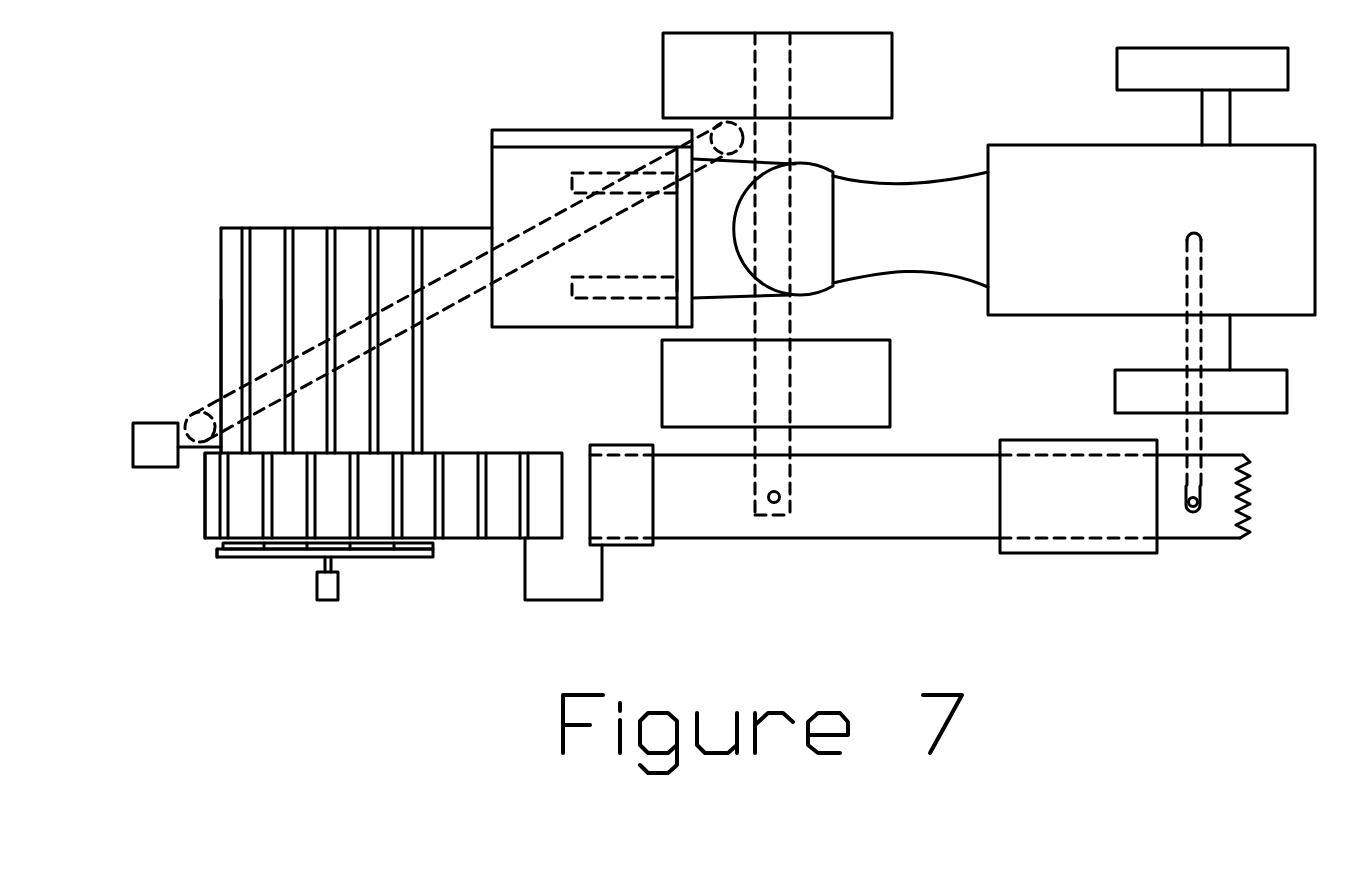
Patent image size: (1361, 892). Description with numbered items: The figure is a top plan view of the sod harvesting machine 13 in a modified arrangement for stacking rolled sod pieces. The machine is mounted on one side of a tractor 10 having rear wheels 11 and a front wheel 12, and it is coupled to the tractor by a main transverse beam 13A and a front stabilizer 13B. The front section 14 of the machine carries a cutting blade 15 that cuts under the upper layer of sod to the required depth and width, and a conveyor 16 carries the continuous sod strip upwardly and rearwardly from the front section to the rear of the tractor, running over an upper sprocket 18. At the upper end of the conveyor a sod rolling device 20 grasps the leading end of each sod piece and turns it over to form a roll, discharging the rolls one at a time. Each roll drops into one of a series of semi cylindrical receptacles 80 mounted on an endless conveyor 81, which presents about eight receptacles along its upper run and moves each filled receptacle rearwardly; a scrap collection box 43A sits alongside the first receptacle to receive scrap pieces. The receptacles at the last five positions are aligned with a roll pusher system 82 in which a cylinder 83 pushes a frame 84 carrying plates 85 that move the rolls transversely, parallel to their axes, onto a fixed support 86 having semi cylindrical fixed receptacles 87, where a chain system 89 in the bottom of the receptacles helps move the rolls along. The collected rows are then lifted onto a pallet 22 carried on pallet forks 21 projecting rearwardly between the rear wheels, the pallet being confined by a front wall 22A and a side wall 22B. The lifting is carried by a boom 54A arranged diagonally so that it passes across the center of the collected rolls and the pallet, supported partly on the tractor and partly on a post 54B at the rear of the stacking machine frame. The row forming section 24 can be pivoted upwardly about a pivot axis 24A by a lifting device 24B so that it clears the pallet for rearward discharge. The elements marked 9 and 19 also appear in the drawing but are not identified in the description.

The conveyor roller 9 is at (372, 288).
The tractor 10 is at (963, 118).
The rear wheels 11 is at (850, 372).
The front wheel 12 is at (1143, 392).
The sod harvesting machine 13 is at (858, 552).
The main transverse beam 13A is at (793, 402).
The front stabilizer 13B is at (1203, 435).
The front section 14 is at (1078, 553).
The cutting blade 15 is at (1220, 525).
The conveyor 16 is at (775, 521).
The upper sprocket 18 is at (178, 494).
The upper conveyor roller 19 is at (180, 284).
The sod rolling device 20 is at (623, 547).
The pallet forks 21 is at (572, 187).
The pallet 22 is at (527, 192).
The front wall 22A is at (683, 244).
The side wall 22B is at (557, 137).
The row forming section 24 is at (294, 301).
The pivot axis 24A is at (197, 450).
The lifting device 24B is at (152, 447).
The scrap collection box 43A is at (592, 603).
The boom 54A is at (470, 270).
The post 54B is at (192, 418).
The receptacles 80 is at (368, 525).
The endless conveyor 81 is at (383, 495).
The roll pusher system 82 is at (340, 585).
The cylinder 83 is at (365, 595).
The frame 84 is at (293, 576).
The plates 85 is at (192, 575).
The fixed support 86 is at (130, 444).
The fixed receptacles 87 is at (313, 257).
The chain system 89 is at (248, 255).